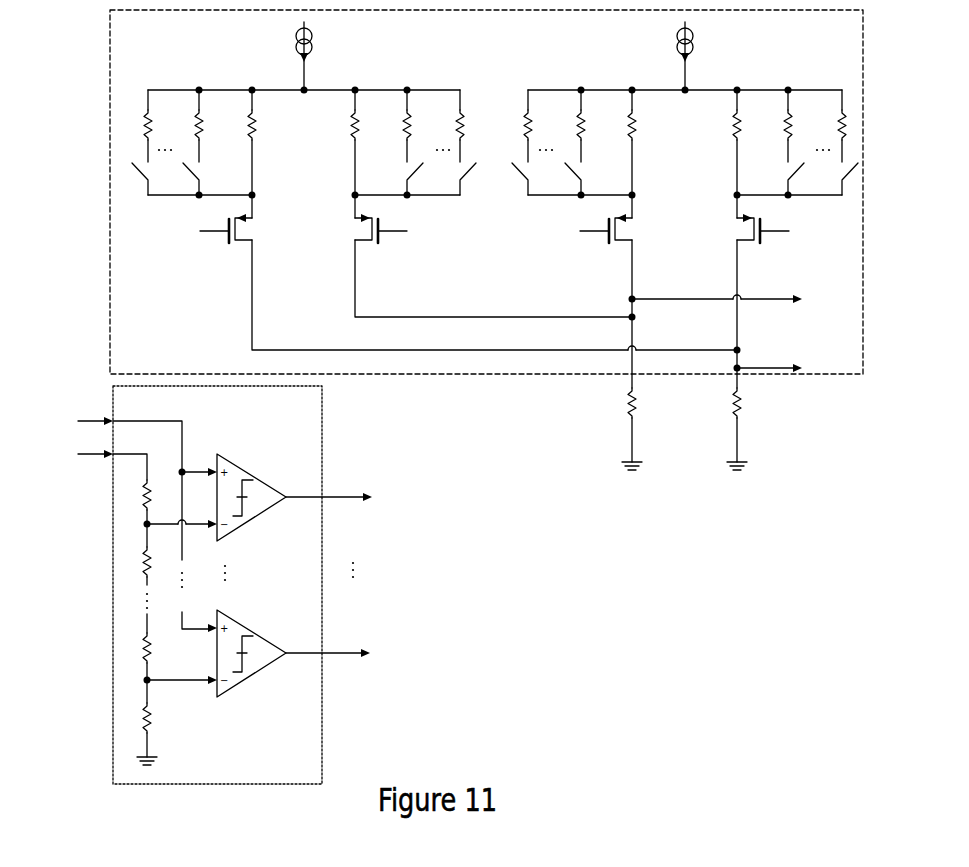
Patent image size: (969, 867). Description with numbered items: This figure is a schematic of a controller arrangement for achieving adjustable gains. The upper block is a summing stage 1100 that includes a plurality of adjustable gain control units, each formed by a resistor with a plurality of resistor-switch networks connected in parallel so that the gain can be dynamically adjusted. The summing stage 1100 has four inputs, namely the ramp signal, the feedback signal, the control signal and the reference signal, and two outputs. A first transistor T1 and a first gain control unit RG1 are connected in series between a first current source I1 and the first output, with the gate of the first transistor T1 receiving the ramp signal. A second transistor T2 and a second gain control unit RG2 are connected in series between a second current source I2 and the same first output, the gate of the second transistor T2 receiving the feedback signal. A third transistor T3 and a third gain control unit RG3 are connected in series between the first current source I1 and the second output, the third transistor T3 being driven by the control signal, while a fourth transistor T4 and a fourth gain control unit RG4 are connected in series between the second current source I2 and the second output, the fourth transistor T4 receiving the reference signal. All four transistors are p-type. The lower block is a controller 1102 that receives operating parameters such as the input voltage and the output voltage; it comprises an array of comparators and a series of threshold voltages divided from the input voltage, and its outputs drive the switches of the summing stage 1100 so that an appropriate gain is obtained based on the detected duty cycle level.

The summing stage 1100 is at (855, 42).
The controller 1102 is at (313, 777).
The first current source I1 is at (287, 55).
The second current source I2 is at (698, 55).
The first gain control unit RG1 is at (265, 142).
The second gain control unit RG2 is at (725, 142).
The third gain control unit RG3 is at (344, 142).
The fourth gain control unit RG4 is at (645, 142).
The first transistor T1 is at (228, 219).
The second transistor T2 is at (759, 219).
The third transistor T3 is at (376, 219).
The fourth transistor T4 is at (609, 219).